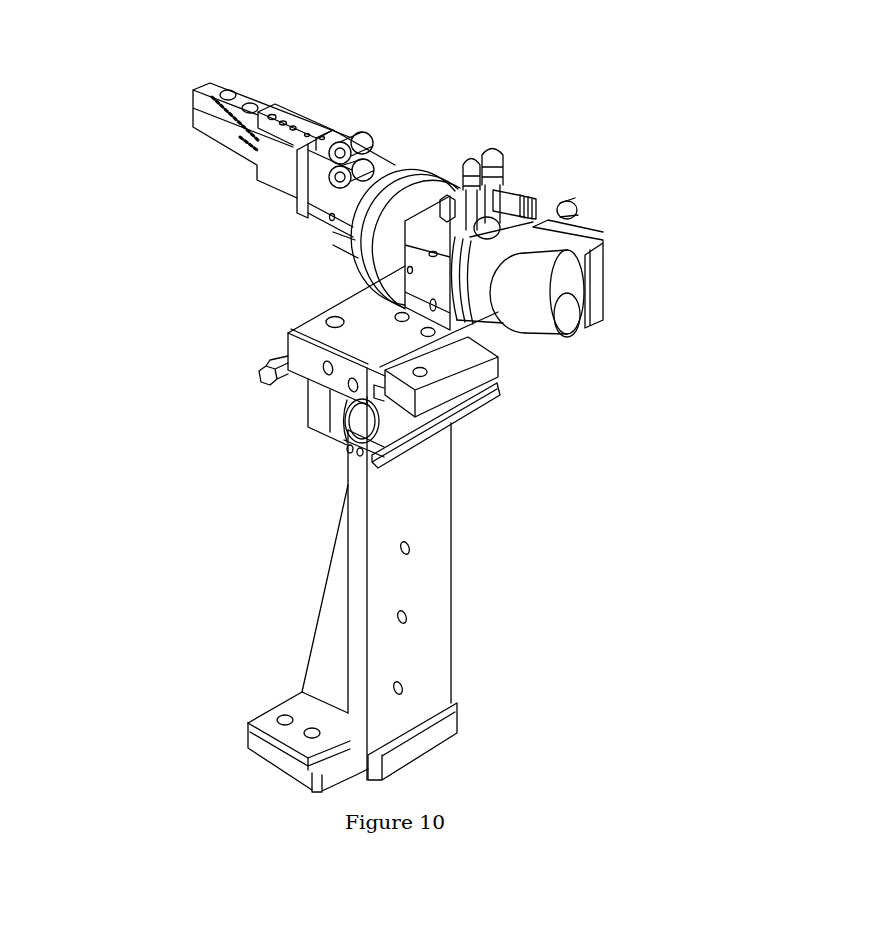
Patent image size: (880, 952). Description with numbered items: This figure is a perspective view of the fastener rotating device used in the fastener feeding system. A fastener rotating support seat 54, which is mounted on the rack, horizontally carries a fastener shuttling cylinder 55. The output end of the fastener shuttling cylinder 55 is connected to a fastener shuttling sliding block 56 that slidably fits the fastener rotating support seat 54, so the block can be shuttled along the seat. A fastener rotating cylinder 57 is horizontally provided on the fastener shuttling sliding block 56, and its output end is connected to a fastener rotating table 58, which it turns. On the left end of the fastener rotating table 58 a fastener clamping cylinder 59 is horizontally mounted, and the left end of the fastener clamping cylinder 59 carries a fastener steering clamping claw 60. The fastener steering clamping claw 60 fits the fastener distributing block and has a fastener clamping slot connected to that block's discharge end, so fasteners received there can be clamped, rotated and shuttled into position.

The fastener rotating support seat 54 is at (408, 510).
The fastener shuttling cylinder 55 is at (388, 422).
The fastener shuttling sliding block 56 is at (388, 341).
The fastener rotating cylinder 57 is at (480, 280).
The fastener rotating table 58 is at (400, 180).
The fastener clamping cylinder 59 is at (320, 187).
The fastener steering clamping claw 60 is at (232, 135).